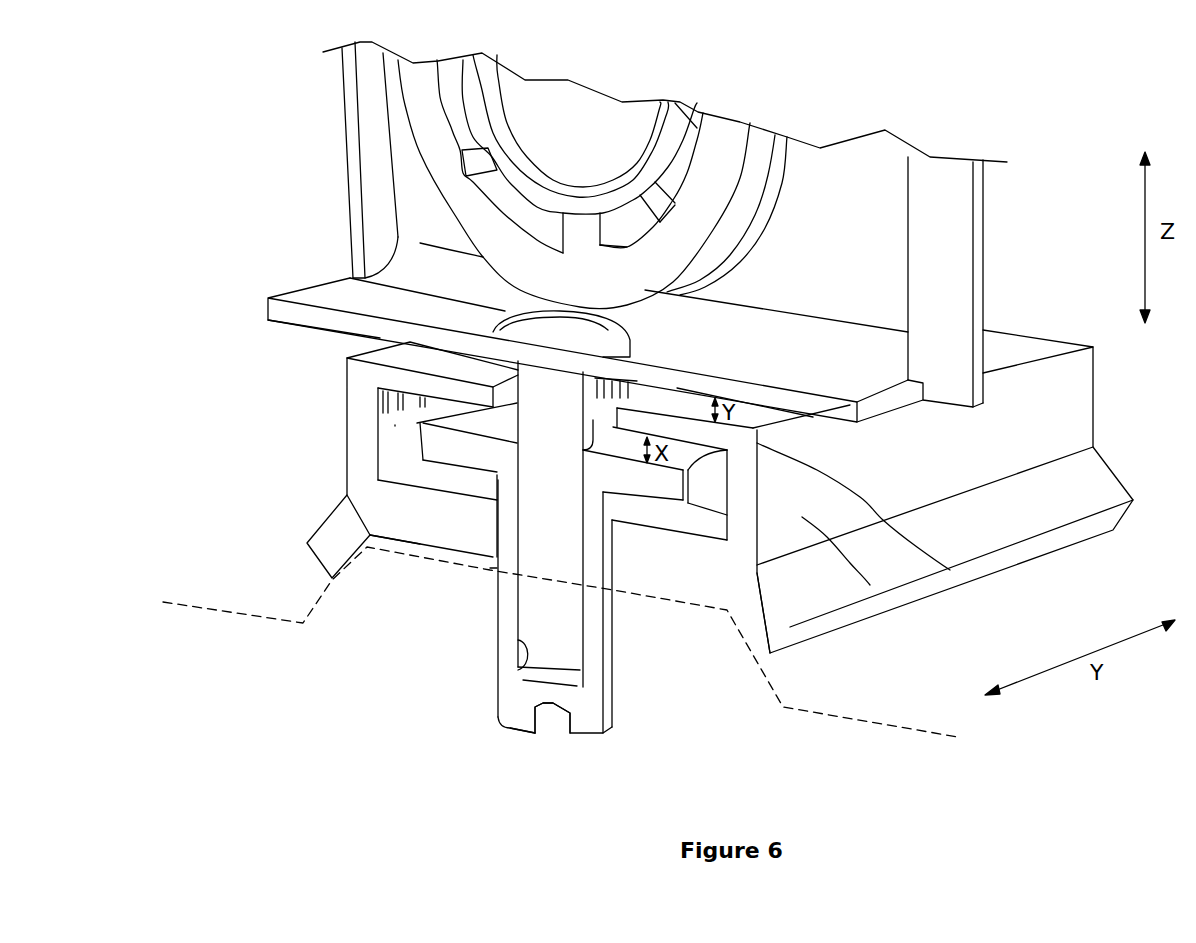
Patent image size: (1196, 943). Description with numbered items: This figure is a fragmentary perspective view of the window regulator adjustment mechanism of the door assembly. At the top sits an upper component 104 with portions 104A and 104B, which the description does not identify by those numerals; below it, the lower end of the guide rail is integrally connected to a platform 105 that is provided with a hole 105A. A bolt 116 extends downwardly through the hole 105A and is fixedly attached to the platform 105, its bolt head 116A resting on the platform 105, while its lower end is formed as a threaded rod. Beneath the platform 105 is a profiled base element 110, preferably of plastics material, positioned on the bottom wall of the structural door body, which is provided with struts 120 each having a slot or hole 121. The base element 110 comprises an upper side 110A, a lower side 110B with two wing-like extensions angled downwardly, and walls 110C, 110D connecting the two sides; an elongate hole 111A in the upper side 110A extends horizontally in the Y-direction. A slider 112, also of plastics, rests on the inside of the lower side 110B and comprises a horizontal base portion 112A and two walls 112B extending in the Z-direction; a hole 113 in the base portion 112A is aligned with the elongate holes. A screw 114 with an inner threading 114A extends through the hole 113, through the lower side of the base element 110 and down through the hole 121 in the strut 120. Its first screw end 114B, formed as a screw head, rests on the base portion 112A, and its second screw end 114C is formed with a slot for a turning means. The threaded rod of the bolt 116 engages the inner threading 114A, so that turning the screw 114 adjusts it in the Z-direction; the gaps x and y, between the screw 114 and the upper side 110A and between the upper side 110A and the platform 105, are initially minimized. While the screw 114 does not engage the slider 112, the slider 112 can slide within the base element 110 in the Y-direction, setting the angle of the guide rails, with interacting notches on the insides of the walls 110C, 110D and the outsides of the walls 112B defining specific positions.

The housing 104 is at (717, 142).
The inner ring of housing 104A is at (757, 163).
The housing support post 104B is at (352, 136).
The platform 105 is at (327, 302).
The hole 105A is at (400, 347).
The base element 110 is at (1077, 413).
The upper side 110A is at (950, 570).
The lower side 110B is at (432, 520).
The wall 110C is at (870, 585).
The wall 110D is at (357, 432).
The elongate hole 111A is at (657, 392).
The slider 112 is at (712, 495).
The base portion 112A is at (412, 475).
The walls 112B is at (390, 425).
The hole 113 is at (710, 493).
The screw 114 is at (503, 660).
The inner threading 114A is at (502, 705).
The first screw end 114B is at (435, 445).
The second screw end 114C is at (550, 722).
The bolt 116 is at (557, 577).
The bolt head 116A is at (350, 278).
The strut 120 is at (210, 610).
The hole 121 is at (490, 570).